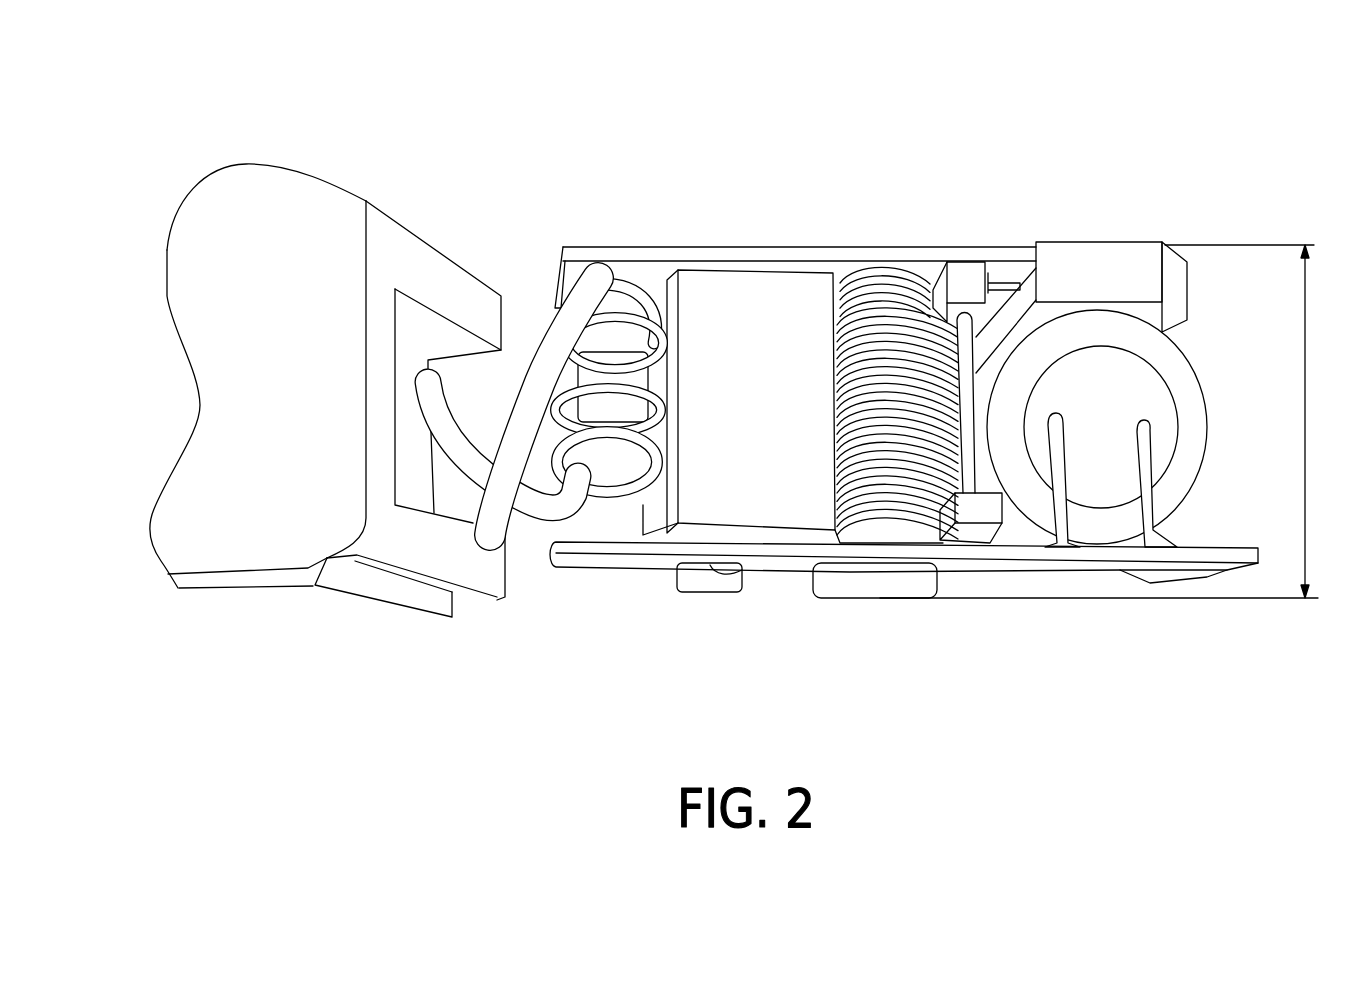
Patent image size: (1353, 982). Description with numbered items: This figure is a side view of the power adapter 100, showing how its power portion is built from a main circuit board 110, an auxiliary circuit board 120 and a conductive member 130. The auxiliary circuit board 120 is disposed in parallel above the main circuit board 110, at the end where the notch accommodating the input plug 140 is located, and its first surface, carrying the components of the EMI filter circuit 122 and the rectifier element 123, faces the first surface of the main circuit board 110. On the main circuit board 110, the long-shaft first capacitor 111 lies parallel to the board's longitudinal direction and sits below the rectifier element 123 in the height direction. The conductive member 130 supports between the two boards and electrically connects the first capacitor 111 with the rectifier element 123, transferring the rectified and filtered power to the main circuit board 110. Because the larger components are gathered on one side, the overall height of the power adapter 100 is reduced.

The power adapter 100 is at (130, 83).
The main circuit board 110 is at (792, 550).
The first capacitor 111 is at (1137, 393).
The auxiliary circuit board 120 is at (635, 252).
The EMI filter circuit 122 is at (892, 352).
The rectifier element 123 is at (1088, 272).
The conductive member 130 is at (967, 340).
The input plug 140 is at (278, 257).